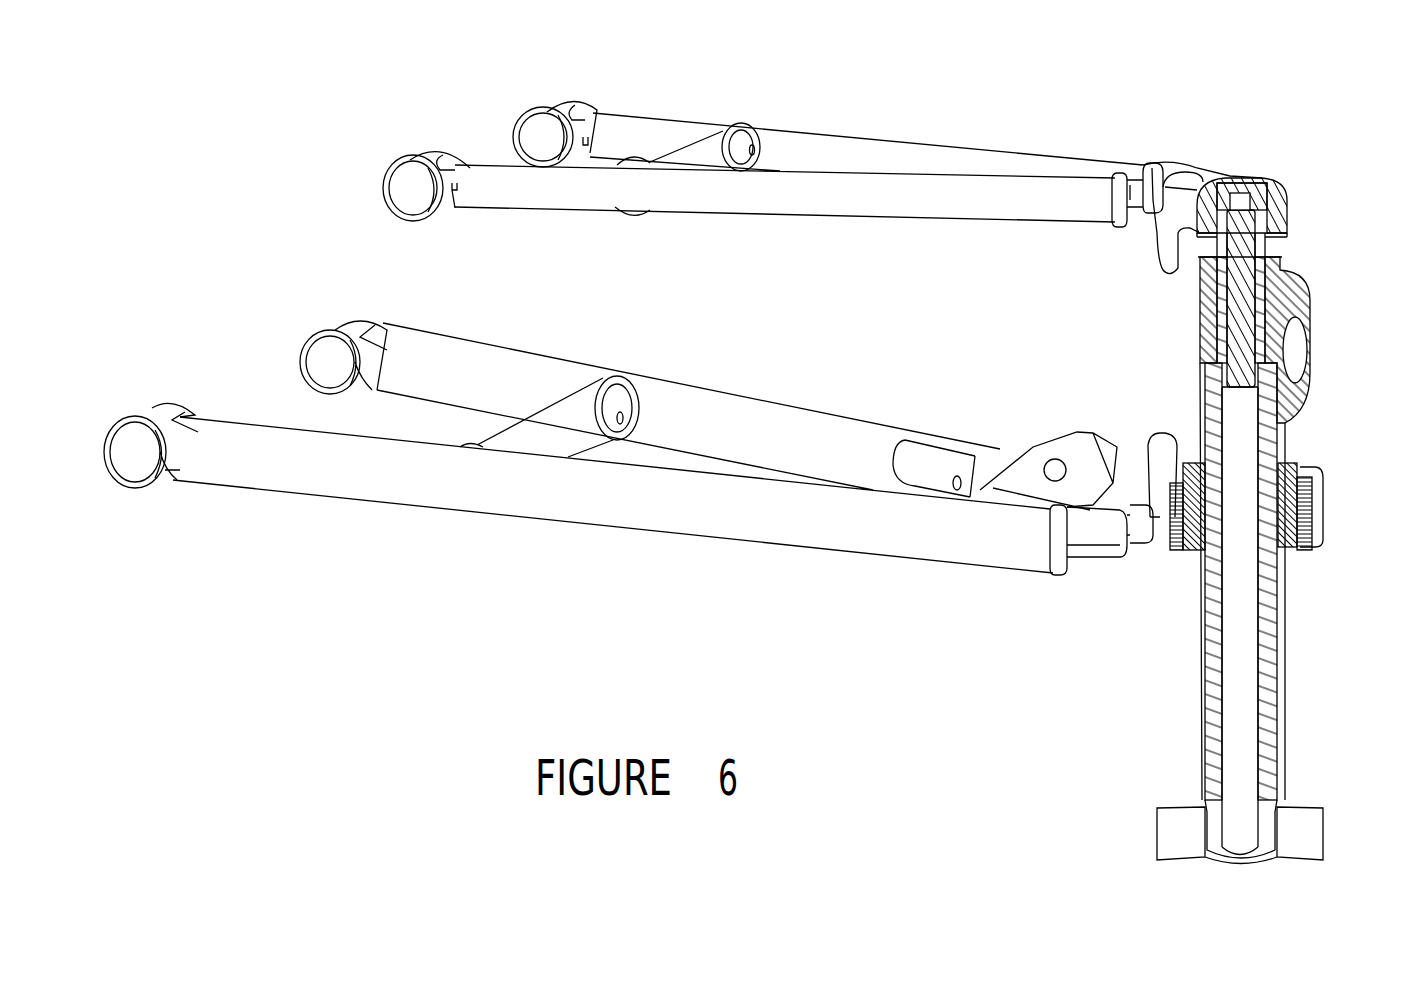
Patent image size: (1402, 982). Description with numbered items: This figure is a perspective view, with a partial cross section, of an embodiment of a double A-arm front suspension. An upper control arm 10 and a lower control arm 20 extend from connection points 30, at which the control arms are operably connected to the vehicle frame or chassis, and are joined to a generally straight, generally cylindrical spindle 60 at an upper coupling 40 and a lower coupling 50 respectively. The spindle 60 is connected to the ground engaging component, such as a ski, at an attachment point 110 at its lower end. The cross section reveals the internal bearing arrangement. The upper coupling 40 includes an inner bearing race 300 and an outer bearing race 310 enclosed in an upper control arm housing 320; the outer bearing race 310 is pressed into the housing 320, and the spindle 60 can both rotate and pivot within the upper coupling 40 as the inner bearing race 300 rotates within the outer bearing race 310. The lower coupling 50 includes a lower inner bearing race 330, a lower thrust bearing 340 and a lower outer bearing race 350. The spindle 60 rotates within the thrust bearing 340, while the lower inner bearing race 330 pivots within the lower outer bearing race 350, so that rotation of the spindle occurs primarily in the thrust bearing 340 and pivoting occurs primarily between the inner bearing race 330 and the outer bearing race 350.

The upper control arm 10 is at (805, 152).
The lower control arm 20 is at (690, 410).
The connection points 30 is at (565, 110).
The upper coupling 40 is at (1283, 175).
The lower coupling 50 is at (1330, 547).
The spindle 60 is at (1203, 300).
The attachment point 110 is at (1170, 833).
The inner bearing race 300 is at (1287, 190).
The outer bearing race 310 is at (1283, 218).
The upper control arm housing 320 is at (1287, 233).
The lower inner bearing race 330 is at (1183, 547).
The lower thrust bearing 340 is at (1200, 463).
The lower outer bearing race 350 is at (1160, 530).